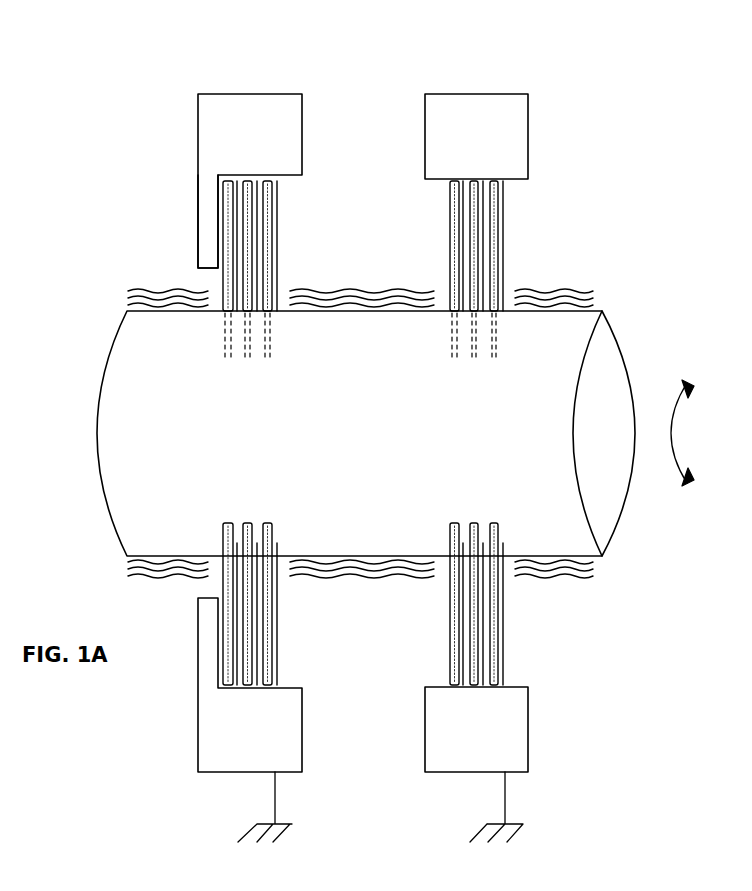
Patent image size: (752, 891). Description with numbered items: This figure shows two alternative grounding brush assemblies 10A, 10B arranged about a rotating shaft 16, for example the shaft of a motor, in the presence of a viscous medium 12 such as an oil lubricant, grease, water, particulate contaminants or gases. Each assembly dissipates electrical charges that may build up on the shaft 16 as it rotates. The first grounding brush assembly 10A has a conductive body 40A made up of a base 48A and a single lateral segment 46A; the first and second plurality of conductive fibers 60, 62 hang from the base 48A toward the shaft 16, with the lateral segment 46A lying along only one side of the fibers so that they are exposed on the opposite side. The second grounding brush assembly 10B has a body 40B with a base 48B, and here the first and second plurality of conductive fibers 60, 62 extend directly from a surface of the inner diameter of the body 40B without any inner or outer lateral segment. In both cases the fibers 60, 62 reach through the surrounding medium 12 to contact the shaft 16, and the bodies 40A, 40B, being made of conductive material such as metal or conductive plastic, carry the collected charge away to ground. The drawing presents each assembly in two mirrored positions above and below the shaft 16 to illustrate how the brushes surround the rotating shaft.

The grounding brush assembly 10A is at (232, 52).
The grounding brush assembly 10B is at (458, 47).
The viscous medium 12 is at (127, 290).
The shaft 16 is at (603, 311).
The body 40A is at (245, 406).
The body 40B is at (509, 406).
The lateral segment 46A is at (198, 221).
The base 48A is at (303, 112).
The base 48B is at (528, 113).
The first plurality of conductive fibers 60 is at (223, 297).
The second plurality of conductive fibers 62 is at (277, 183).